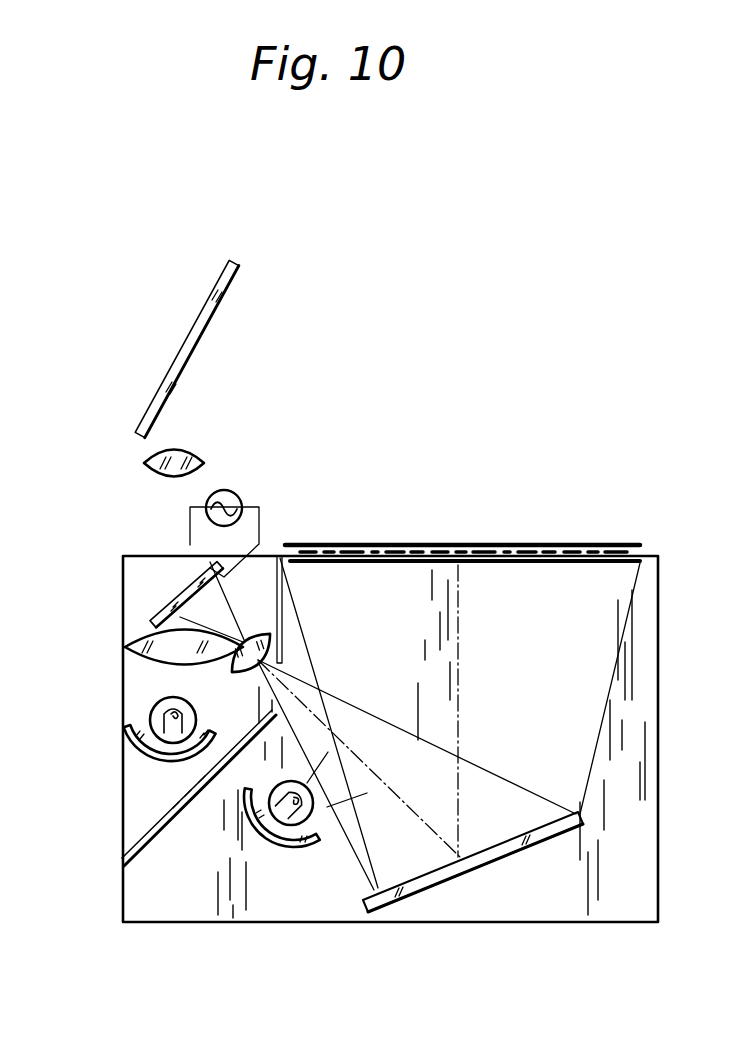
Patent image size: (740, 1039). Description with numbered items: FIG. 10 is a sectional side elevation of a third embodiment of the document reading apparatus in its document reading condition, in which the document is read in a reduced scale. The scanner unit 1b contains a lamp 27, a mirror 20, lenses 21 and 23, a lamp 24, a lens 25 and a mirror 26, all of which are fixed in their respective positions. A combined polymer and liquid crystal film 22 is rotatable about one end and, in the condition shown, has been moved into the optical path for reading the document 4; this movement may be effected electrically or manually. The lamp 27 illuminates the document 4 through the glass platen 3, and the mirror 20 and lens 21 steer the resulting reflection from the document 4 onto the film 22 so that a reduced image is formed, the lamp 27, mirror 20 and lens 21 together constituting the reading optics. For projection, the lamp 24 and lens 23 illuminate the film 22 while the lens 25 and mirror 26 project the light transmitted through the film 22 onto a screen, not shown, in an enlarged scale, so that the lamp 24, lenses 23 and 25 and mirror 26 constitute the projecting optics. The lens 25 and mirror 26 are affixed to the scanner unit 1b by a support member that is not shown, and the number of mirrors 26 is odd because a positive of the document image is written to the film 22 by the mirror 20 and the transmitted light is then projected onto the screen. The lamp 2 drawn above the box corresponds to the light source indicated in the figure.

The scanner unit 1b is at (469, 462).
The light source lamp 2 is at (226, 489).
The glass platen 3 is at (487, 556).
The document 4 is at (440, 543).
The mirror 20 is at (455, 880).
The lens 21 is at (260, 634).
The combined polymer and liquid crystal film 22 is at (168, 602).
The lens 23 is at (130, 638).
The lamp 24 is at (147, 752).
The lens 25 is at (143, 463).
The mirror 26 is at (182, 347).
The lamp 27 is at (277, 847).